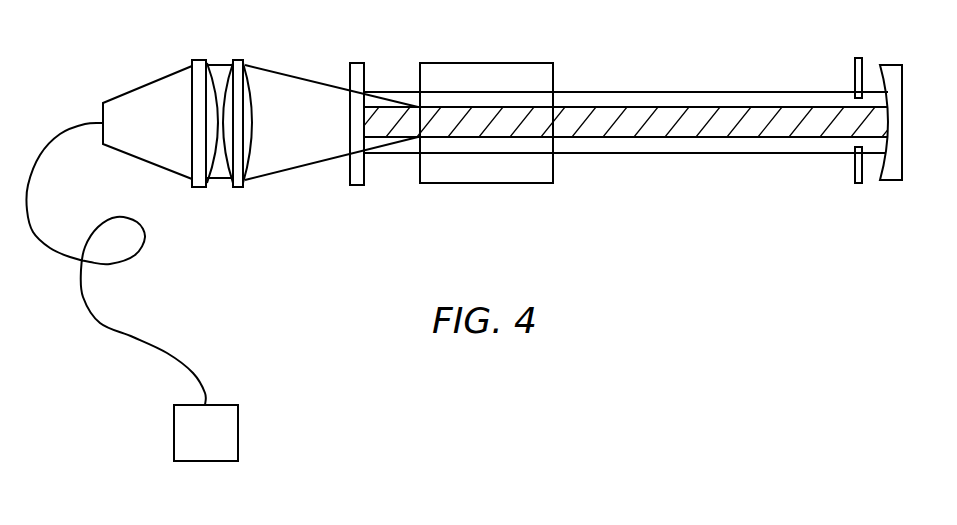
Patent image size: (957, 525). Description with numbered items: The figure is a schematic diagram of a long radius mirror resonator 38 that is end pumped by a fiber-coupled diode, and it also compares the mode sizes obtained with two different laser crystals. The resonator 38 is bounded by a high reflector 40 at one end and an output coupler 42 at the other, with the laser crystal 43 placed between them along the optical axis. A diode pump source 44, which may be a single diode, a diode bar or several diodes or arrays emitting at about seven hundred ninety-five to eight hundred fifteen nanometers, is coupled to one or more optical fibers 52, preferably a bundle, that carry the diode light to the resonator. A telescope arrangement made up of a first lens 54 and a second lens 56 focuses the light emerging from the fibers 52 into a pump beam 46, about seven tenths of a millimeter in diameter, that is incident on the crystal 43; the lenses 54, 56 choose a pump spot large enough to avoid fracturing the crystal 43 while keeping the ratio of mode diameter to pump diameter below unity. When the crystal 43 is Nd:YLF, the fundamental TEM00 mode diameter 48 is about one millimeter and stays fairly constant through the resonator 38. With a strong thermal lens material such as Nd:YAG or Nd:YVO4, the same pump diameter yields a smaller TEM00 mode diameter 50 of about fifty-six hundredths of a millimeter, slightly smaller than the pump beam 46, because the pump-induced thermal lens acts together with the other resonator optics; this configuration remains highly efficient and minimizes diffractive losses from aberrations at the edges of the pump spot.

The long radius mirror resonator 38 is at (360, 137).
The high reflector 40 is at (334, 146).
The output coupler 42 is at (873, 152).
The laser crystal 43 is at (486, 146).
The diode pump source 44 is at (239, 433).
The pump beam 46 is at (331, 108).
The TEM00 mode diameter 48 is at (626, 114).
The TEM00 mode diameter 50 is at (630, 154).
The optical fibers 52 is at (118, 264).
The first lens 54 is at (192, 106).
The second lens 56 is at (253, 101).